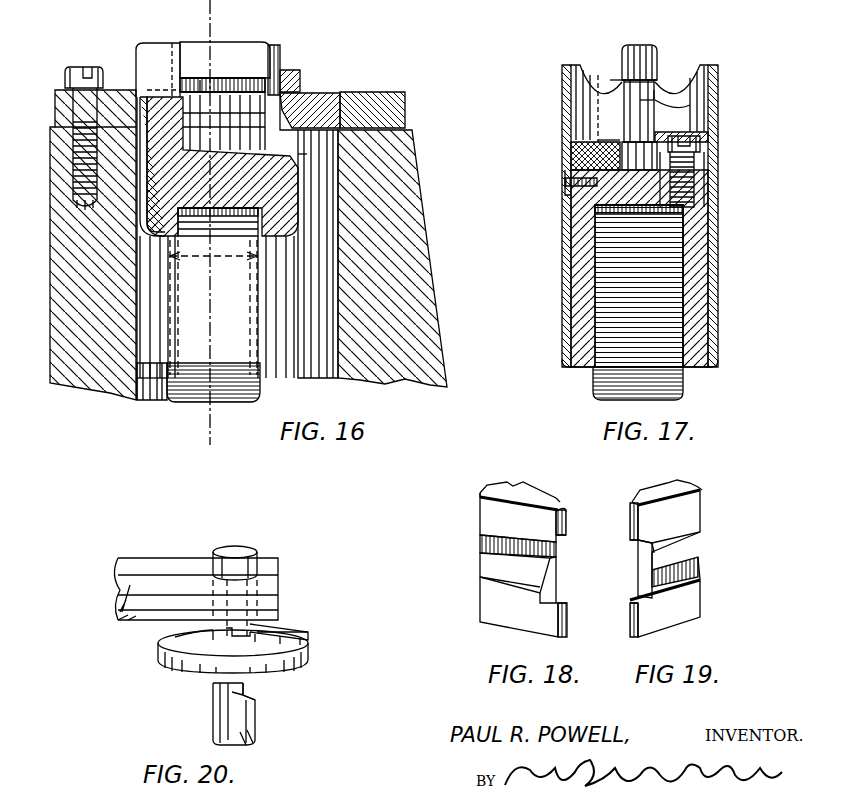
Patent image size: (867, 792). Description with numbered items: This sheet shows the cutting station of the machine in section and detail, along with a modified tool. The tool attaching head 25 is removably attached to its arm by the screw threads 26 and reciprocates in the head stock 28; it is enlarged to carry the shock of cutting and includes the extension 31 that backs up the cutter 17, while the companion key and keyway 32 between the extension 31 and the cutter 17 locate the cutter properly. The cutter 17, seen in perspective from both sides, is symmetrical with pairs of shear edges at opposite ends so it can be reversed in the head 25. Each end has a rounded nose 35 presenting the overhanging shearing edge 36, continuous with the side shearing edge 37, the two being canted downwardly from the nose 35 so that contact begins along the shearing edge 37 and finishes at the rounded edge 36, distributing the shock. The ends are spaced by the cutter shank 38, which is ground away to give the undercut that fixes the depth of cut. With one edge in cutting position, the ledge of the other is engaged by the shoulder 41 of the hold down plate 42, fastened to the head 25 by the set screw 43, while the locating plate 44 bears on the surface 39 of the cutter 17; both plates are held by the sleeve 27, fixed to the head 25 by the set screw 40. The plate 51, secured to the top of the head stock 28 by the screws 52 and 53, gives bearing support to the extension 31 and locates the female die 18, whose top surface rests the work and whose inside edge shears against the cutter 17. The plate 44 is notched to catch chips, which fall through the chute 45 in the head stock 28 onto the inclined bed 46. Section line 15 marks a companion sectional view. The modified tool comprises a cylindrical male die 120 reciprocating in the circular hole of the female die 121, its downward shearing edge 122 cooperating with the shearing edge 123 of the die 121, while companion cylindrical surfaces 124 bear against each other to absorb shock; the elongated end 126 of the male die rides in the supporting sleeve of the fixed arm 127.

In FIG. 16, the section line 15 is at (50, 126).
In FIG. 16, the cutter 17 is at (219, 50).
In FIG. 17, the cutter 17 is at (648, 46).
In FIG. 18, the cutter 17 is at (518, 490).
In FIG. 19, the cutter 17 is at (660, 488).
In FIG. 16, the female die 18 is at (322, 98).
In FIG. 16, the tool attaching head 25 is at (277, 356).
In FIG. 17, the tool attaching head 25 is at (700, 270).
In FIG. 16, the screw threads 26 is at (261, 394).
In FIG. 17, the screw threads 26 is at (684, 386).
In FIG. 17, the sleeve 27 is at (718, 313).
In FIG. 16, the head stock 28 is at (413, 171).
In FIG. 16, the extension 31 is at (148, 47).
In FIG. 17, the extension 31 is at (628, 82).
In FIG. 18, the key and keyway 32 is at (483, 492).
In FIG. 16, the nose 35 is at (270, 50).
In FIG. 17, the nose 35 is at (648, 60).
In FIG. 18, the nose 35 is at (564, 506).
In FIG. 19, the nose 35 is at (632, 505).
In FIG. 16, the shearing edge 36 is at (278, 73).
In FIG. 17, the shearing edge 36 is at (650, 96).
In FIG. 18, the shearing edge 36 is at (564, 536).
In FIG. 19, the shearing edge 36 is at (632, 541).
In FIG. 16, the shearing edge 37 is at (205, 78).
In FIG. 17, the shearing edge 37 is at (628, 80).
In FIG. 18, the shearing edge 37 is at (493, 547).
In FIG. 19, the shearing edge 37 is at (698, 580).
In FIG. 16, the cutter shank 38 is at (283, 84).
In FIG. 17, the cutter shank 38 is at (645, 102).
In FIG. 18, the cutter shank 38 is at (560, 568).
In FIG. 19, the cutter shank 38 is at (640, 578).
In FIG. 17, the surface 39 is at (690, 103).
In FIG. 18, the surface 39 is at (497, 607).
In FIG. 19, the surface 39 is at (678, 521).
In FIG. 17, the set screw 40 is at (563, 181).
In FIG. 17, the shoulder 41 is at (660, 136).
In FIG. 17, the hold down plate 42 is at (702, 153).
In FIG. 17, the set screw 43 is at (685, 183).
In FIG. 16, the locating plate 44 is at (218, 150).
In FIG. 17, the locating plate 44 is at (575, 152).
In FIG. 16, the chute 45 is at (325, 190).
In FIG. 16, the inclined bed 46 is at (307, 154).
In FIG. 17, the inclined bed 46 is at (598, 140).
In FIG. 16, the plate 51 is at (385, 98).
In FIG. 16, the screw 52 is at (82, 67).
In FIG. 16, the set screw 53 is at (293, 73).
In FIG. 20, the male die 120 is at (256, 722).
In FIG. 20, the female die 121 is at (182, 673).
In FIG. 20, the shearing edge 122 is at (262, 633).
In FIG. 20, the shearing edge 123 is at (308, 636).
In FIG. 20, the cylindrical surfaces 124 is at (175, 636).
In FIG. 20, the end 126 is at (240, 547).
In FIG. 20, the arm 127 is at (178, 557).